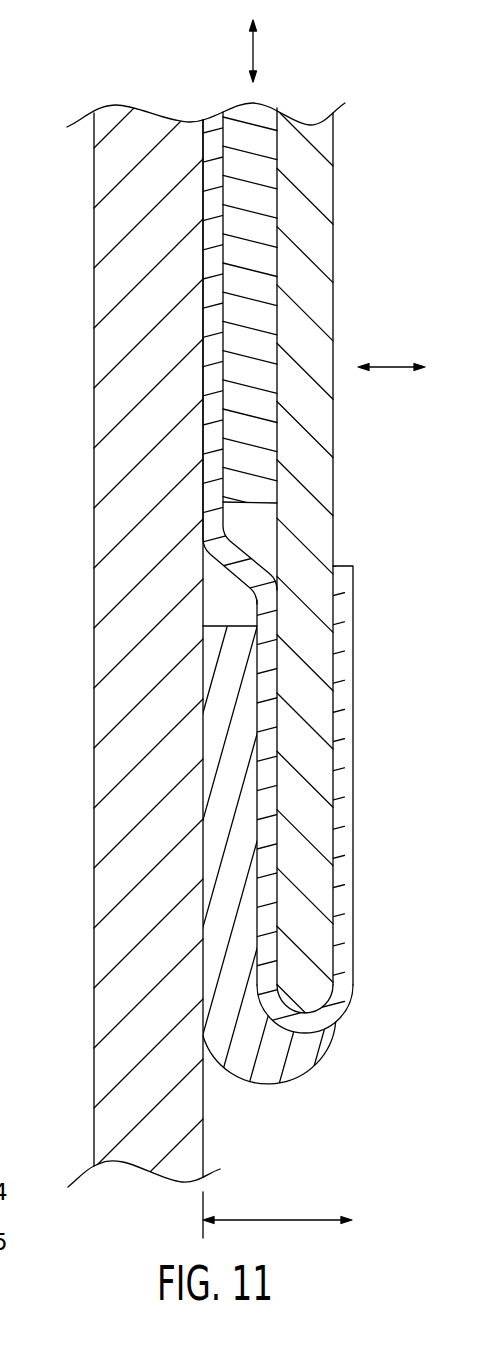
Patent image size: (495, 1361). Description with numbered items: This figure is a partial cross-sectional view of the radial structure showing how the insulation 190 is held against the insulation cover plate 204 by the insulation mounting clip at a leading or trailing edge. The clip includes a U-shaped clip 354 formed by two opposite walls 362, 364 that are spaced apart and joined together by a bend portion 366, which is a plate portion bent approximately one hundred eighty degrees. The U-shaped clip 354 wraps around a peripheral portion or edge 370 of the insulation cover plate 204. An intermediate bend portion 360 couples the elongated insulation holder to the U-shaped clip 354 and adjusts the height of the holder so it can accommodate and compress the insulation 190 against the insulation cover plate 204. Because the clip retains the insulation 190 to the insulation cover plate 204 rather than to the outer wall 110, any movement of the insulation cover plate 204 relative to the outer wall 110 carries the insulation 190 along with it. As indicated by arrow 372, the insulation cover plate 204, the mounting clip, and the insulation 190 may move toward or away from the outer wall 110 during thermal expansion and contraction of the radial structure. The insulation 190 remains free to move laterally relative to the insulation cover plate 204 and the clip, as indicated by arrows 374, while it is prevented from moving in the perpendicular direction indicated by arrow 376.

The outer wall 110 is at (94, 233).
The insulation 190 is at (250, 252).
The insulation cover plate 204 is at (334, 293).
The U-shaped clip 354 is at (364, 975).
The intermediate bend portion 360 is at (243, 552).
The wall 362 is at (278, 858).
The wall 364 is at (353, 776).
The bend portion 366 is at (348, 1007).
The peripheral portion or edge 370 is at (313, 777).
The arrow 372 is at (278, 1222).
The arrows 374 is at (255, 50).
The arrow 376 is at (392, 364).